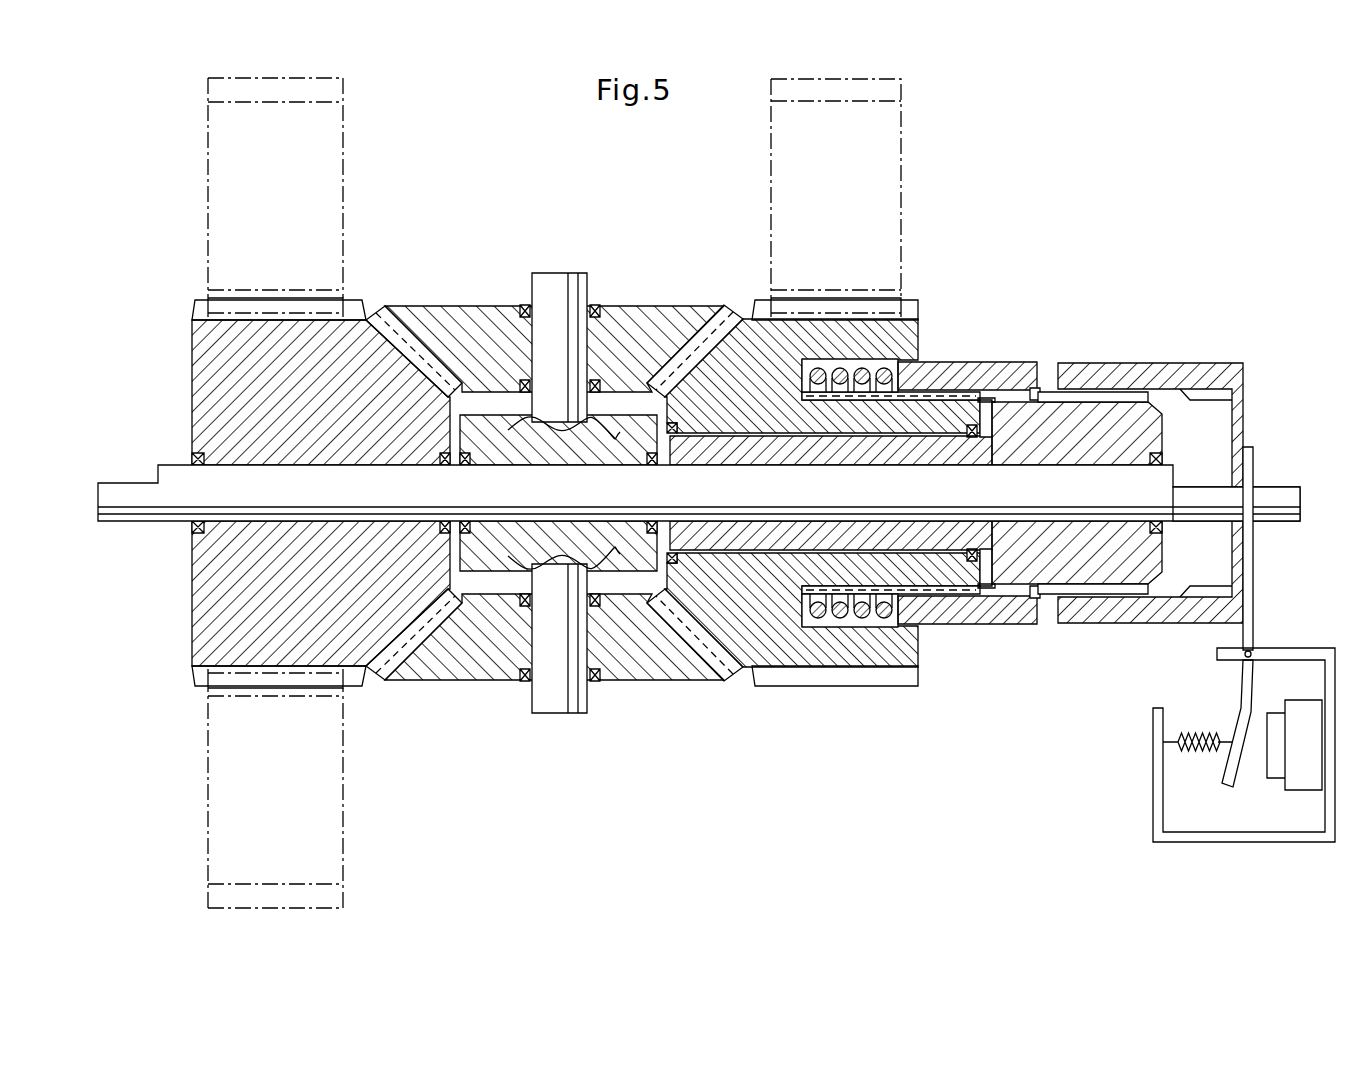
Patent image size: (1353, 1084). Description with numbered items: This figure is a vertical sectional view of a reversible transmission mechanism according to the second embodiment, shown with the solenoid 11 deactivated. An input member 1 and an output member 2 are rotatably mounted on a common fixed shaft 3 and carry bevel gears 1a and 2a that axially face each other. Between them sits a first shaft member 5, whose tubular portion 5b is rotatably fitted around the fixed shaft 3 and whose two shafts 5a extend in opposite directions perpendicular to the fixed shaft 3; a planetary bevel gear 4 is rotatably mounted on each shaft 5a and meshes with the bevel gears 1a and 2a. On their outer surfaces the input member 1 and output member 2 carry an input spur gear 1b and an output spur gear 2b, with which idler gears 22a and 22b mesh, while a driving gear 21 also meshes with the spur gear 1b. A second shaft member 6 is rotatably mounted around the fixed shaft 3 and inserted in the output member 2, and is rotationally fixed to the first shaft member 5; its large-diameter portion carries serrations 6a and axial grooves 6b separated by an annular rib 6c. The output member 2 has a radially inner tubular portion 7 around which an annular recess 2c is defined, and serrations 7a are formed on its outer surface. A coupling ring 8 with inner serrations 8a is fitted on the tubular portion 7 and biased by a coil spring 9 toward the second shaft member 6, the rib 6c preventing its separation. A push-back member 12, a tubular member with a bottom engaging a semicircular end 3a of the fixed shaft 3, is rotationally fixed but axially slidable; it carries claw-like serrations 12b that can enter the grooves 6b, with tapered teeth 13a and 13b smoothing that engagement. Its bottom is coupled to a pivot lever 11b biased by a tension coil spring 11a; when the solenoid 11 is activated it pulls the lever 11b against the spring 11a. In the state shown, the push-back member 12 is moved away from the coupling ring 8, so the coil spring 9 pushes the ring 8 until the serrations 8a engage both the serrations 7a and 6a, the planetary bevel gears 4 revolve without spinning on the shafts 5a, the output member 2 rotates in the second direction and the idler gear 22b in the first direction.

The input member 1 is at (179, 623).
The bevel gear 1a is at (372, 318).
The input spur gear 1b is at (195, 308).
The output member 2 is at (916, 293).
The bevel gear 2a is at (738, 322).
The output spur gear 2b is at (758, 306).
The annular recess 2c is at (850, 600).
The fixed shaft 3 is at (178, 470).
The end of the fixed shaft 3a is at (1270, 497).
The planetary bevel gear 4 is at (475, 330).
The first shaft member 5 is at (559, 265).
The shaft 5a is at (546, 690).
The tubular portion 5b is at (625, 548).
The second shaft member 6 is at (1182, 586).
The serrations 6a is at (1032, 600).
The axial grooves 6b is at (1070, 600).
The annular rib 6c is at (1042, 606).
The tubular portion 7 is at (892, 600).
The serrations 7a is at (882, 562).
The coupling ring 8 is at (998, 639).
The serrations 8a is at (985, 600).
The coil spring 9 is at (818, 610).
The solenoid 11 is at (1300, 770).
The tension coil spring 11a is at (1190, 752).
The pivot lever 11b is at (1250, 588).
The push-back member 12 is at (1178, 357).
The serrations 12b is at (1222, 396).
The teeth 13a is at (1163, 586).
The teeth 13b is at (1190, 592).
The driving gear 21 is at (230, 832).
The idler gear 22a is at (230, 172).
The idler gear 22b is at (874, 150).